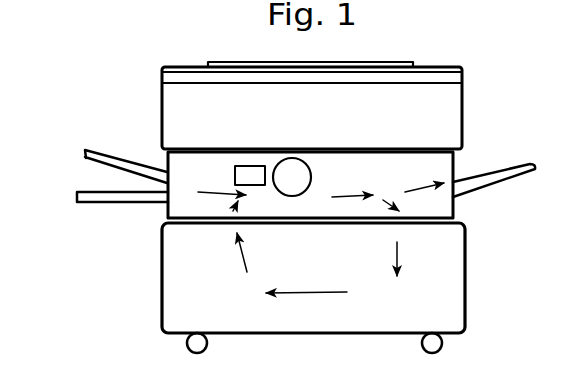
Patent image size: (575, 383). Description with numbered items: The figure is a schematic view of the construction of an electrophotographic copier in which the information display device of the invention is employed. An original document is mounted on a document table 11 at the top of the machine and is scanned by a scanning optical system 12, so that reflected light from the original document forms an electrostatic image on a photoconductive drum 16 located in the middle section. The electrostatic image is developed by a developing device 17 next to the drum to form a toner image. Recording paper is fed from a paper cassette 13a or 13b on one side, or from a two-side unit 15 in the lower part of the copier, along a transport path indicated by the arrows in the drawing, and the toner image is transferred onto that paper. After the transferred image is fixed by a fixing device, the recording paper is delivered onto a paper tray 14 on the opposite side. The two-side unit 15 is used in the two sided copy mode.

The document table 11 is at (406, 62).
The scanning optical system 12 is at (321, 124).
The paper cassette 13a is at (122, 152).
The paper cassette 13b is at (134, 203).
The paper tray 14 is at (498, 172).
The two-side unit 15 is at (327, 277).
The photoconductive drum 16 is at (311, 177).
The developing device 17 is at (235, 167).